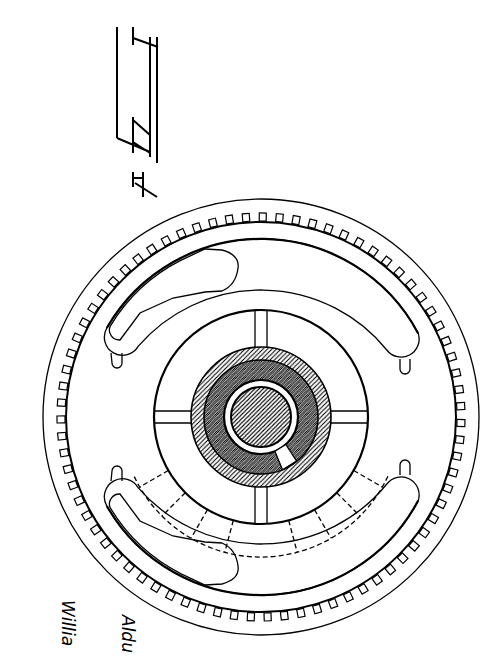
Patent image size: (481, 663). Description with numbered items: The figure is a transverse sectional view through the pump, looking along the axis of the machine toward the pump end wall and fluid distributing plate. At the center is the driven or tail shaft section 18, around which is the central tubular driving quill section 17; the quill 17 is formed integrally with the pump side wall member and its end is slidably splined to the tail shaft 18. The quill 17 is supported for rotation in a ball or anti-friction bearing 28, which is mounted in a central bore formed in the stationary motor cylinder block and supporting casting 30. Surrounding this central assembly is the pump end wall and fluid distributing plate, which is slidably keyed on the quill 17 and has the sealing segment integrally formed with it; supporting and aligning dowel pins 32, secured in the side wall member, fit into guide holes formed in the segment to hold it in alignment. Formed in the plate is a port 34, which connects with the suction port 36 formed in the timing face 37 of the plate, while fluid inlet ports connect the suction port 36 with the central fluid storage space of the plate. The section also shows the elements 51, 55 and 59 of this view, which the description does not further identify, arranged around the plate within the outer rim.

The central tubular driving quill section 17 is at (320, 382).
The tail shaft section 18 is at (318, 448).
The anti-friction bearing 28 is at (290, 462).
The stationary motor cylinder block and supporting casting 30 is at (367, 480).
The supporting and aligning dowel pins 32 is at (417, 520).
The port 34 is at (182, 560).
The suction port 36 is at (297, 577).
The timing face 37 is at (437, 482).
The sleeve 51 is at (290, 358).
The upper arcuate member 55 is at (205, 262).
The spoke 59 is at (240, 318).